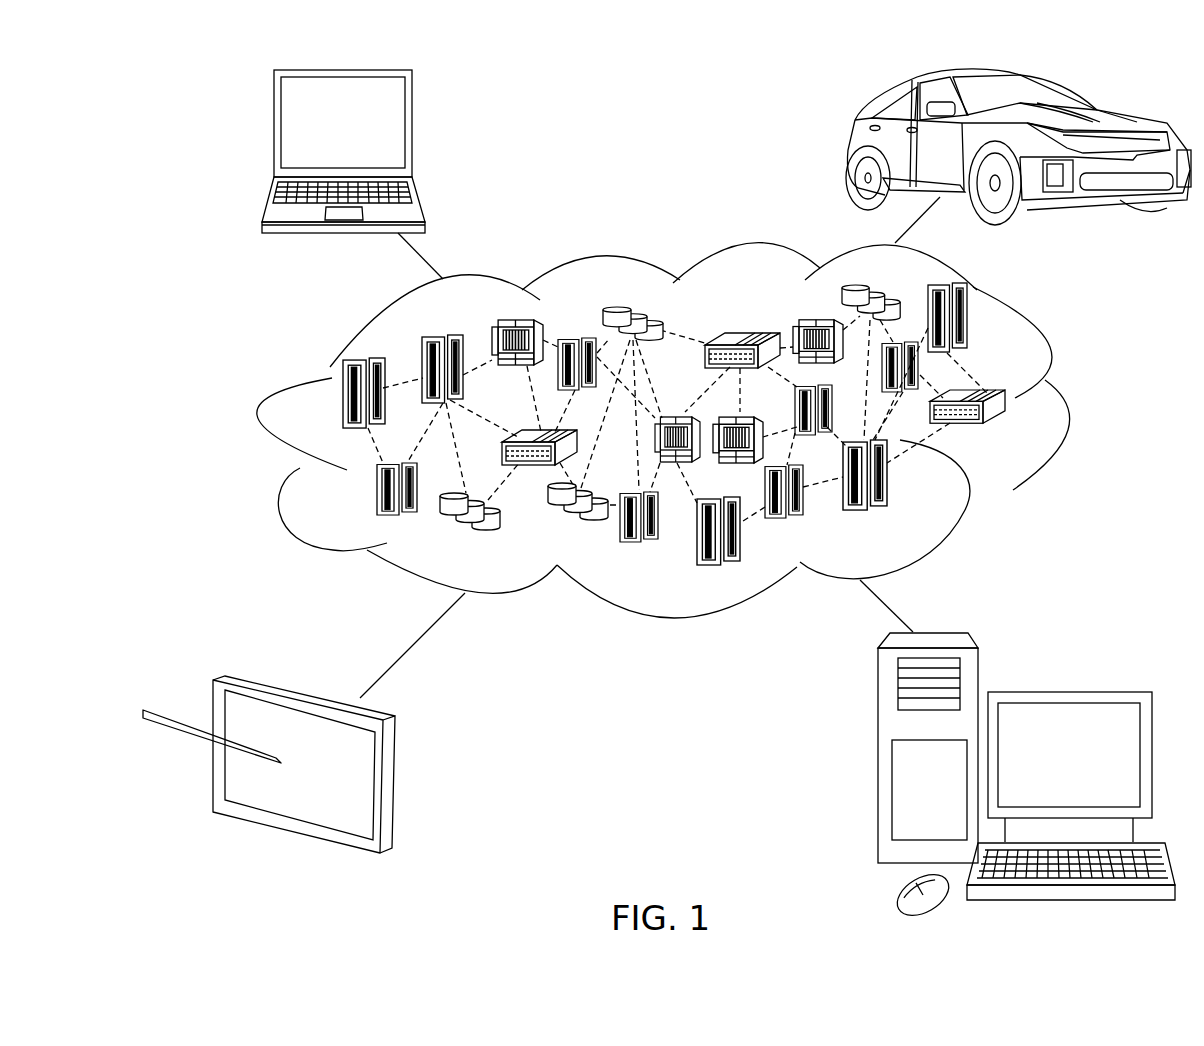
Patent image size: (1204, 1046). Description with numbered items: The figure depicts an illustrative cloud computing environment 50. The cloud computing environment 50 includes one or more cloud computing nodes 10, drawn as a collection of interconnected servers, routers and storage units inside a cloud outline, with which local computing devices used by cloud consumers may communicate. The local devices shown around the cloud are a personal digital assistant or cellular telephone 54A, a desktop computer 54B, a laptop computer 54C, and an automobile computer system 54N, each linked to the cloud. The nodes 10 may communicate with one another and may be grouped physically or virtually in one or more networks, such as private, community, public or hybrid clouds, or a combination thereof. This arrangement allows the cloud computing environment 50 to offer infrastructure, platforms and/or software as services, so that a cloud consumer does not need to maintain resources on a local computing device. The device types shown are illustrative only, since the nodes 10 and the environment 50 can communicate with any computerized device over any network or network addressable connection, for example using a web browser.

The cloud computing nodes 10 is at (1014, 438).
The cloud computing environment 50 is at (1067, 402).
The personal digital assistant (PDA) or cellular telephone 54A is at (400, 782).
The desktop computer 54B is at (1067, 690).
The laptop computer 54C is at (412, 132).
The automobile computer system 54N is at (850, 147).